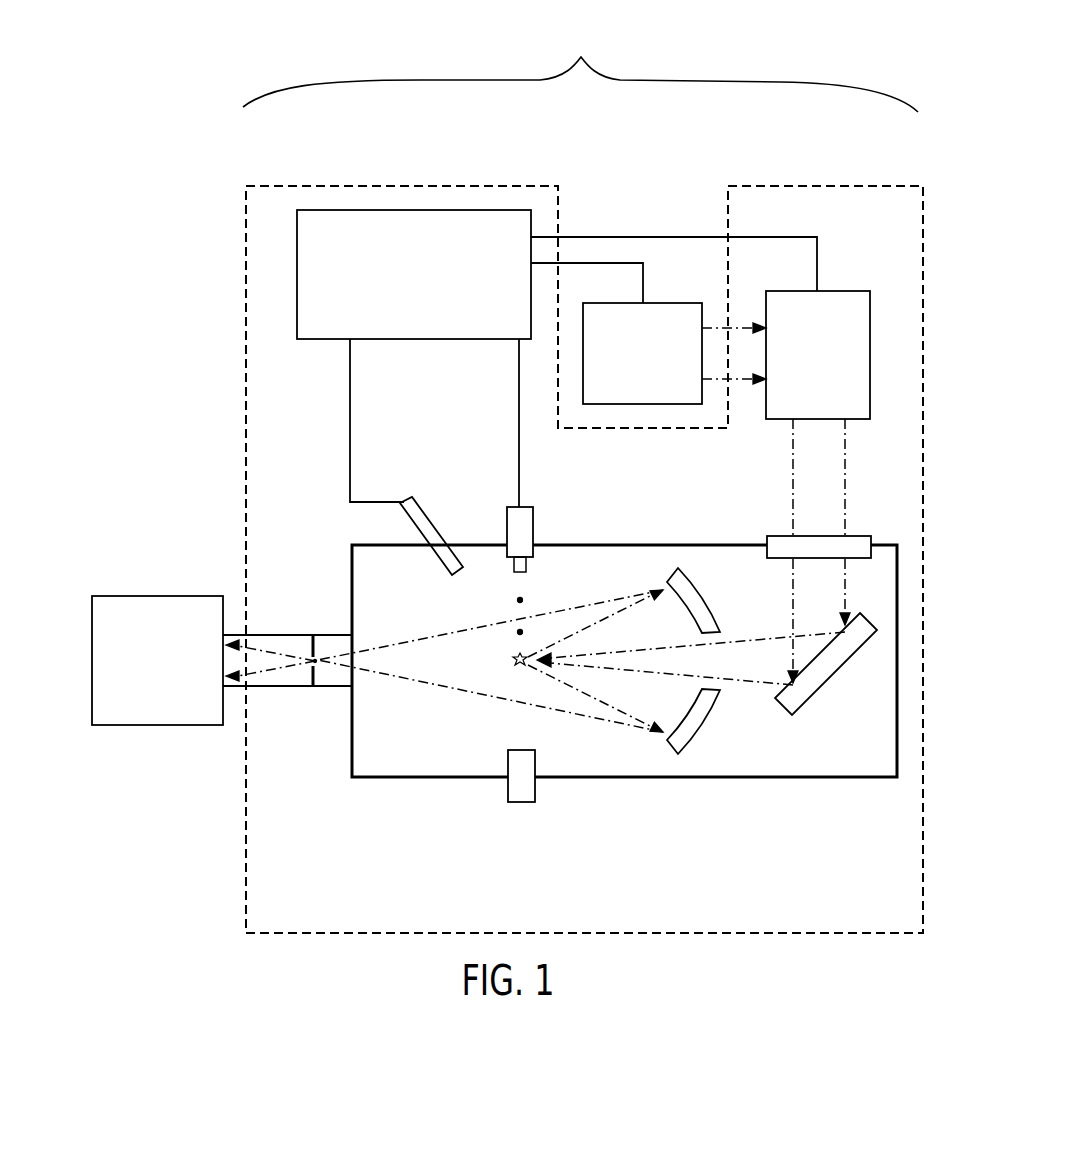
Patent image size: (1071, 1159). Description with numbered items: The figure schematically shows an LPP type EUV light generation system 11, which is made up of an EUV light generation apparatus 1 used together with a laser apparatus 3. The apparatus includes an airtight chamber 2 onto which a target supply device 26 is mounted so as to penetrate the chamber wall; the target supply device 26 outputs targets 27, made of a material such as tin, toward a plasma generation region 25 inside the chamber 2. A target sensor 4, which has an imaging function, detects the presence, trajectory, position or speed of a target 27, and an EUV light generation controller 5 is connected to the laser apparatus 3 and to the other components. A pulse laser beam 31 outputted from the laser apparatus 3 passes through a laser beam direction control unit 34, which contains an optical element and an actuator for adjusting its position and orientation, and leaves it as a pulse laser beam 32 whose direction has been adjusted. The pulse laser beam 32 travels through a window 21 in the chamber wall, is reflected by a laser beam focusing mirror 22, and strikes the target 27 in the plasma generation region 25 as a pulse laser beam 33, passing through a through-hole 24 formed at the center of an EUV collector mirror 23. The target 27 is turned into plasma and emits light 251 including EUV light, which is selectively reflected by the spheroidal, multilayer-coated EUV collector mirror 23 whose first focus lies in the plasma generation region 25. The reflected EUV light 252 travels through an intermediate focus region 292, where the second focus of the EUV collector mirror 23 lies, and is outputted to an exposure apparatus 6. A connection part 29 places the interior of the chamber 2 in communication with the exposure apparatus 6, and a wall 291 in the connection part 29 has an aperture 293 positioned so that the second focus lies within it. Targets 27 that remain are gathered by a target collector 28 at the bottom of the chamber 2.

The EUV light generation system 11 is at (580, 66).
The EUV light generation apparatus 1 is at (282, 186).
The chamber 2 is at (358, 545).
The laser apparatus 3 is at (677, 303).
The target sensor 4 is at (408, 500).
The EUV light generation controller 5 is at (297, 292).
The exposure apparatus 6 is at (170, 596).
The window 21 is at (782, 536).
The laser beam focusing mirror 22 is at (825, 685).
The EUV collector mirror 23 is at (665, 752).
The through-hole 24 is at (738, 690).
The plasma generation region 25 is at (518, 667).
The target supply device 26 is at (522, 507).
The target 27 is at (518, 600).
The target collector 28 is at (515, 802).
The connection part 29 is at (330, 688).
The wall 291 is at (313, 650).
The intermediate focus region 292 is at (312, 668).
The aperture 293 is at (318, 660).
The light 251 is at (590, 698).
The EUV light 252 is at (408, 682).
The pulse laser beam 31 is at (737, 325).
The pulse laser beam 32 is at (845, 492).
The pulse laser beam 33 is at (647, 650).
The laser beam direction control unit 34 is at (826, 291).